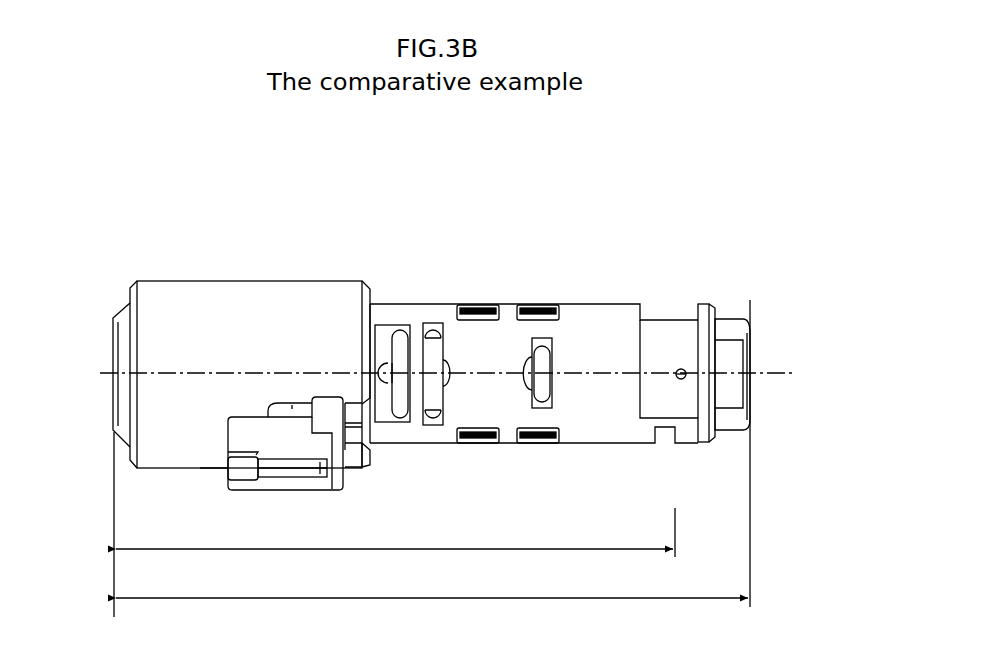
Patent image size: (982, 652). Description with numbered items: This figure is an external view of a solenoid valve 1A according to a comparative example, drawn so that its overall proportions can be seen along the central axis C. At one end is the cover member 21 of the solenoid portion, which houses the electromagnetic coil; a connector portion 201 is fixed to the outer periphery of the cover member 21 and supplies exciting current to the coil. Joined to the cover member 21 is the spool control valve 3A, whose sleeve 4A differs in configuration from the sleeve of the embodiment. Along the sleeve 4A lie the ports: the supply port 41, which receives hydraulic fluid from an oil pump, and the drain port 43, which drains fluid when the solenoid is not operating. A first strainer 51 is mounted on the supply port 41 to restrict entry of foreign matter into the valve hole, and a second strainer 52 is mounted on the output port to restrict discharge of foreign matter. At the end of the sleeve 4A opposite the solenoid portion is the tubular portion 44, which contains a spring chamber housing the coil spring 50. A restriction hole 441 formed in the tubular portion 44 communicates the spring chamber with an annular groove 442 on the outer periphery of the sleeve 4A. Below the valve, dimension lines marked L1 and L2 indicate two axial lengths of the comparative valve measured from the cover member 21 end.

The solenoid valve 1A is at (152, 210).
The cover member 21 is at (132, 270).
The connector portion 201 is at (277, 482).
The spool control valve 3A is at (411, 457).
The drain port 43 is at (433, 315).
The second strainer 52 is at (480, 305).
The first strainer 51 is at (533, 305).
The supply port 41 is at (547, 333).
The sleeve 4A is at (748, 296).
The annular groove 442 is at (665, 318).
The tubular portion 44 is at (755, 427).
The coil spring 50 is at (686, 370).
The restriction hole 441 is at (684, 382).
The central axis C is at (772, 370).
The length L1 is at (394, 524).
The length L2 is at (433, 453).